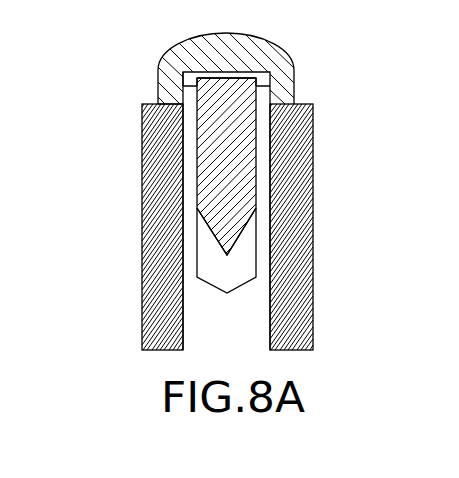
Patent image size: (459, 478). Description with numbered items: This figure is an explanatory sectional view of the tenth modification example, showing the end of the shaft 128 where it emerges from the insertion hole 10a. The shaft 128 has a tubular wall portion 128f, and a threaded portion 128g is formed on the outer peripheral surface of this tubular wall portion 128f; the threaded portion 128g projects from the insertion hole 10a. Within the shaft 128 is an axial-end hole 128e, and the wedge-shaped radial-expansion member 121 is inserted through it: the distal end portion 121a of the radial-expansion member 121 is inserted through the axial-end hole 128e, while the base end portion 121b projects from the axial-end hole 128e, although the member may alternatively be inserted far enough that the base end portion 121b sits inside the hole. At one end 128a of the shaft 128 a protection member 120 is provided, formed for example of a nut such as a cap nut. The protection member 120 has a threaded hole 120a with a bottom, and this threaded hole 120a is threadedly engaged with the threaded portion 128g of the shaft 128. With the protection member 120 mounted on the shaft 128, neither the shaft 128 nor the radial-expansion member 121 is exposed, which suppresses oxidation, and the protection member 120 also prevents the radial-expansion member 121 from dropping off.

The protection member 120 is at (178, 52).
The threaded hole 120a is at (270, 105).
The radial-expansion member 121 is at (229, 243).
The distal end portion 121a is at (227, 257).
The base end portion 121b is at (237, 77).
The shaft 128 is at (202, 328).
The one end 128a is at (180, 73).
The axial-end hole 128e is at (205, 256).
The tubular wall portion 128f is at (192, 157).
The threaded portion 128g is at (160, 97).
The insertion hole 10a is at (269, 331).